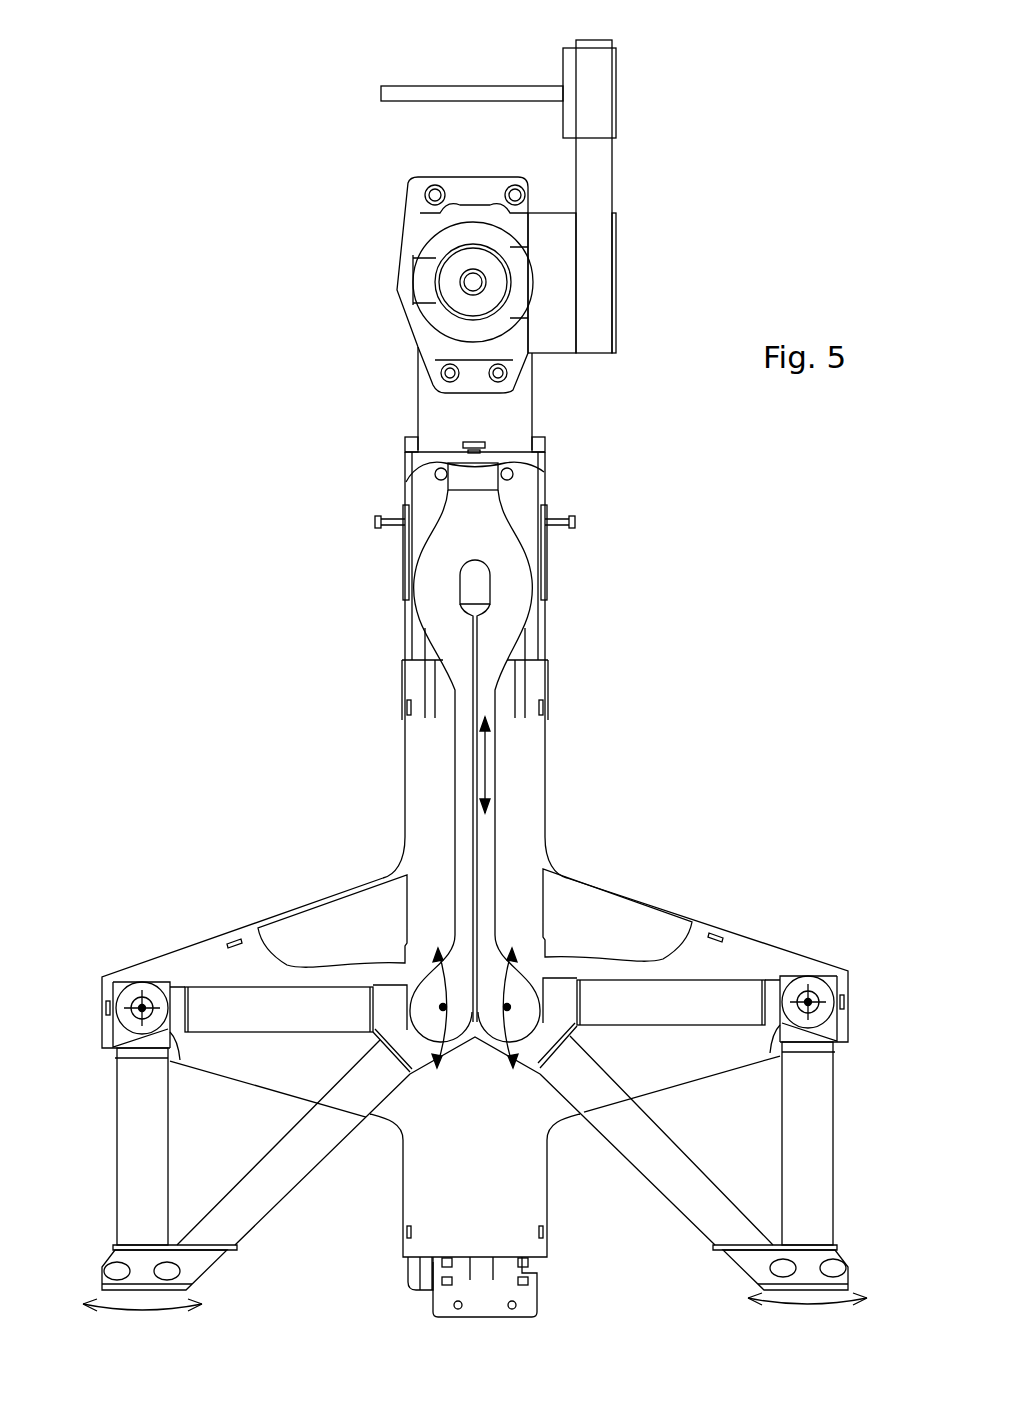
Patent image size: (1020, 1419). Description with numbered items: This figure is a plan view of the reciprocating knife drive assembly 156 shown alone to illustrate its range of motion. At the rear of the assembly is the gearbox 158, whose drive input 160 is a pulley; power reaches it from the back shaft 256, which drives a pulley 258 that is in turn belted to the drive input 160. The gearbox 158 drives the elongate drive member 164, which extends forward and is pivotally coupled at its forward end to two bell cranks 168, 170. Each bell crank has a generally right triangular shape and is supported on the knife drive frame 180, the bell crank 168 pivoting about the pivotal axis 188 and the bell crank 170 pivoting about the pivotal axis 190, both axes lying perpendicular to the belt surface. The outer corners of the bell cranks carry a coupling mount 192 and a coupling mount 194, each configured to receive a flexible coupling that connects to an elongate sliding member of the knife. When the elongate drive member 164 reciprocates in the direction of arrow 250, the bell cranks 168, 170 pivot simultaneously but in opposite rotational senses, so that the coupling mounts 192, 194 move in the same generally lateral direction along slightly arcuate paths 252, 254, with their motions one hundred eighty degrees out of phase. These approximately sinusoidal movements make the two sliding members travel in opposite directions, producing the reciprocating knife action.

The reciprocating knife drive assembly 156 is at (566, 760).
The gearbox 158 is at (433, 317).
The drive input 160 is at (636, 242).
The elongate drive member 164 is at (487, 837).
The bell crank 168 is at (833, 1147).
The bell crank 170 is at (130, 1139).
The knife drive frame 180 is at (600, 878).
The pivotal axis 188 is at (811, 998).
The pivotal axis 190 is at (138, 1004).
The coupling mount 192 is at (850, 1281).
The coupling mount 194 is at (100, 1285).
The arrow 250 is at (485, 765).
The arcuate path 252 is at (142, 1313).
The arcuate path 254 is at (817, 1305).
The back shaft 256 is at (422, 102).
The pulley 258 is at (617, 118).